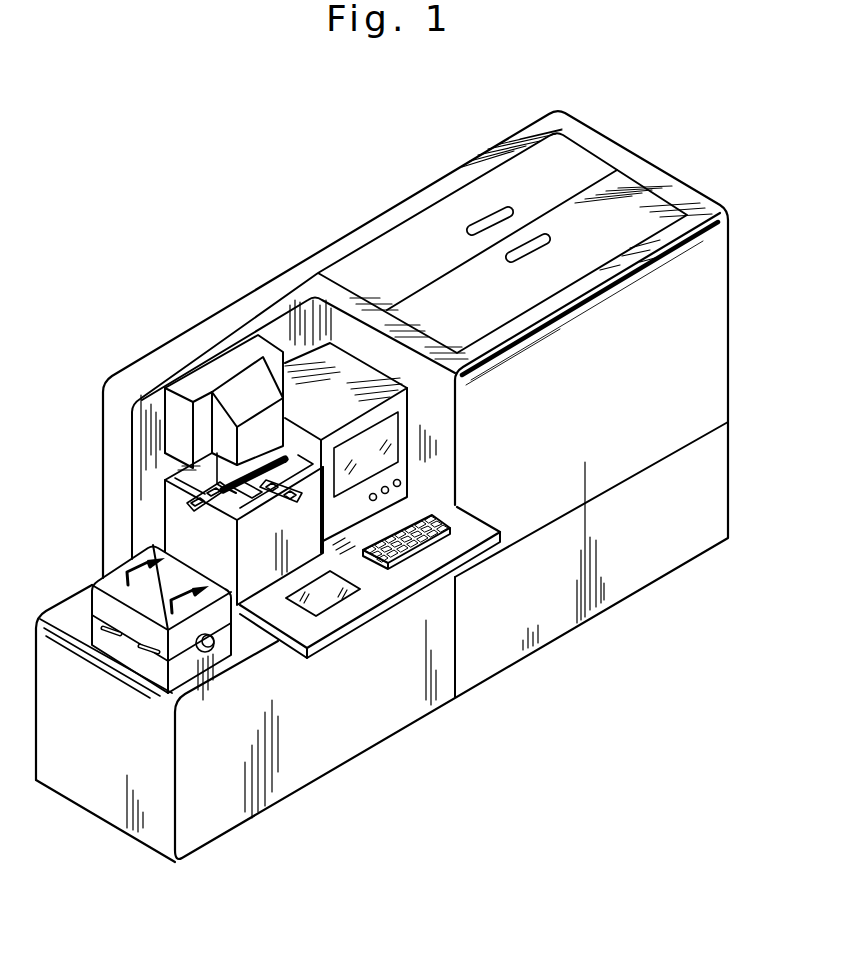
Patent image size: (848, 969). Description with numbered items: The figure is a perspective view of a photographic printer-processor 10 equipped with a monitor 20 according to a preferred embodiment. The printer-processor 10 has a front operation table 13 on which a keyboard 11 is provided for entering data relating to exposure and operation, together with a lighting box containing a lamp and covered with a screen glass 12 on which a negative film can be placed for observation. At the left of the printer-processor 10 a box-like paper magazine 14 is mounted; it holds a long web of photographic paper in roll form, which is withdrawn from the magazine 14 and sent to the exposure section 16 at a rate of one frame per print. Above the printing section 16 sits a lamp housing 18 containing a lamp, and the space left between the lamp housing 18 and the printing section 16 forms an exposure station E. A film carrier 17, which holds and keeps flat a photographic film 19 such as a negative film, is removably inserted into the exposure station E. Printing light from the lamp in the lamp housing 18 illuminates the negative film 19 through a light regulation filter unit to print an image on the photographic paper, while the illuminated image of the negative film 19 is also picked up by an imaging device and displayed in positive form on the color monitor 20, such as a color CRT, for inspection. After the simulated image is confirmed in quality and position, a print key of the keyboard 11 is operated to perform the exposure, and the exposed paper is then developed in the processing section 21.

The photographic printer-processor 10 is at (281, 270).
The keyboard 11 is at (438, 521).
The screen glass 12 is at (320, 584).
The front operation table 13 is at (465, 533).
The paper magazine 14 is at (130, 655).
The exposure section 16 is at (253, 574).
The film carrier 17 is at (243, 494).
The lamp housing 18 is at (277, 421).
The photographic film 19 is at (188, 501).
The monitor 20 is at (384, 443).
The processing section 21 is at (711, 307).
The exposure station E is at (226, 499).